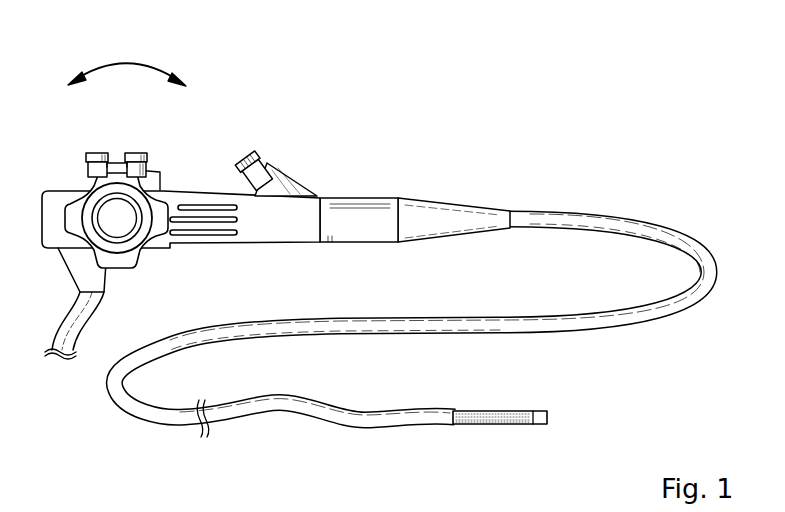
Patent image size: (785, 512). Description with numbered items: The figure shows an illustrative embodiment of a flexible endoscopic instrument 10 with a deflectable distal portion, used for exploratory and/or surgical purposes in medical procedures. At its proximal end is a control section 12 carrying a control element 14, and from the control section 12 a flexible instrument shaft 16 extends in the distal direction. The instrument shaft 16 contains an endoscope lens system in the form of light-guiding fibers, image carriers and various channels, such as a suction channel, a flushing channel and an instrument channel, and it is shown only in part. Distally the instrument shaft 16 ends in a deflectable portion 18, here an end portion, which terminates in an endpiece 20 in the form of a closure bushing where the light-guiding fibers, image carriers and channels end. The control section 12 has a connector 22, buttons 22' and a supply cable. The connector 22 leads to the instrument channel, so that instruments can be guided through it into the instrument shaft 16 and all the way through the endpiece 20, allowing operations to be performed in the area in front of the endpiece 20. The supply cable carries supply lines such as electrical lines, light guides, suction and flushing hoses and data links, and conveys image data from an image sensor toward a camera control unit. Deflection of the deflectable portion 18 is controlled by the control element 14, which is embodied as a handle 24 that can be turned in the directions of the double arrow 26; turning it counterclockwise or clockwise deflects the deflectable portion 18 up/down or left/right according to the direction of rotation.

The endoscopic instrument 10 is at (419, 172).
The control section 12 is at (325, 140).
The control element 14 is at (157, 258).
The instrument shaft 16 is at (648, 217).
The deflectable portion 18 is at (493, 425).
The endpiece 20 is at (548, 417).
The connector 22 is at (274, 145).
The buttons 22' is at (116, 140).
The handle 24 is at (158, 206).
The double arrow 26 is at (136, 62).